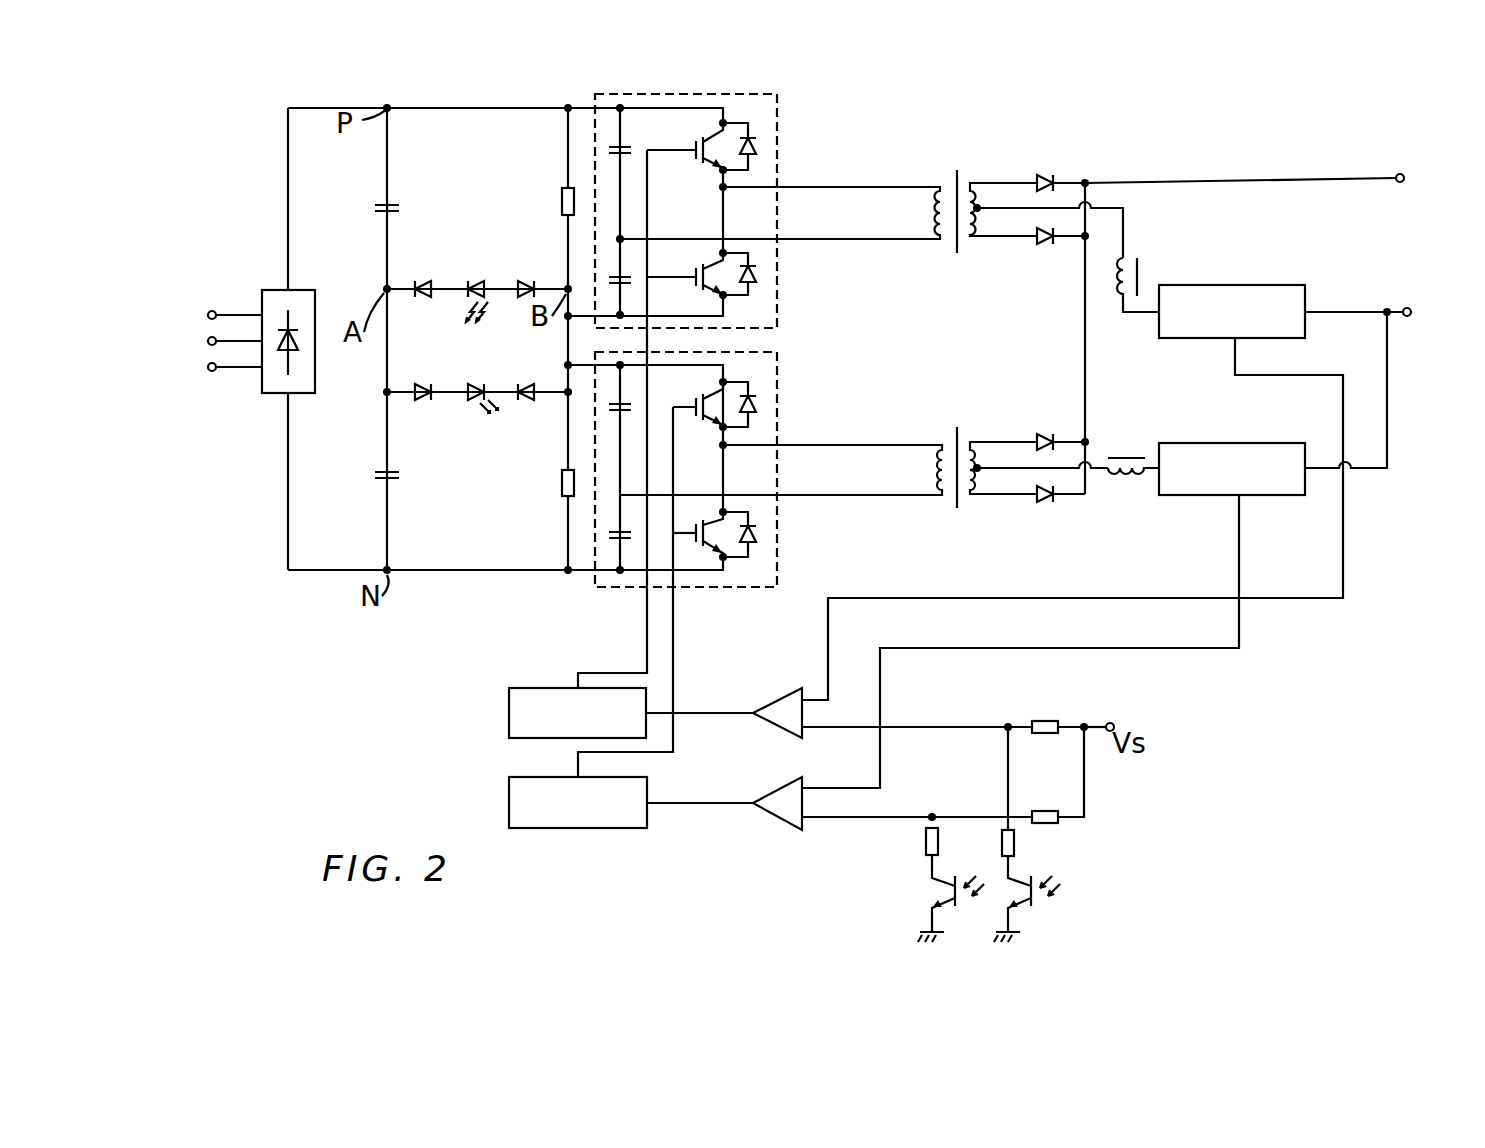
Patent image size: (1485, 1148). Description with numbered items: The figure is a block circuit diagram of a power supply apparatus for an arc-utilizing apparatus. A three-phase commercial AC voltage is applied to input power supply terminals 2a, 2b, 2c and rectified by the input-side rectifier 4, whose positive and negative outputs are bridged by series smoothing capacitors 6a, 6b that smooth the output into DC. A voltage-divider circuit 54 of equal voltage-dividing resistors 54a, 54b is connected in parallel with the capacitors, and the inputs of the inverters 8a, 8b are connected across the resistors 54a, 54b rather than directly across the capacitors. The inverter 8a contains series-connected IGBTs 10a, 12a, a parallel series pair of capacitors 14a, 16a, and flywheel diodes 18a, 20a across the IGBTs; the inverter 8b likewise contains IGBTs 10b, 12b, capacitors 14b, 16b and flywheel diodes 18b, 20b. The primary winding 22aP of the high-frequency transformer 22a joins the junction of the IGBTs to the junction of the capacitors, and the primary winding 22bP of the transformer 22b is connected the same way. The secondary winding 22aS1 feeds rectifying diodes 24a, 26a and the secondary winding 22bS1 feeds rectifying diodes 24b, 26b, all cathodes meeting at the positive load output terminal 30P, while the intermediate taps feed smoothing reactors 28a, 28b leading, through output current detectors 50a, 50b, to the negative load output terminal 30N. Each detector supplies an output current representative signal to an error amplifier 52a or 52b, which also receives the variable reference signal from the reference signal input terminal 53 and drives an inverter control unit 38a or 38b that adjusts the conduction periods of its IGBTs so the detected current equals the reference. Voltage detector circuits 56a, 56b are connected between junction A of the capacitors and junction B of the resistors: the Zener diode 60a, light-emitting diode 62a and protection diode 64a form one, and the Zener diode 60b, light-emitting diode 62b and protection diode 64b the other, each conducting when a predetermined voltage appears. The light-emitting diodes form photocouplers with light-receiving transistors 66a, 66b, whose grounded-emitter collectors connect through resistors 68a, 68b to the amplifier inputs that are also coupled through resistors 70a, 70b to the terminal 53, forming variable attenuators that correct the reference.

The input power supply terminal 2a is at (215, 311).
The input power supply terminal 2b is at (215, 346).
The input power supply terminal 2c is at (213, 372).
The input-side rectifier 4 is at (300, 302).
The smoothing capacitor 6a is at (378, 210).
The smoothing capacitor 6b is at (378, 480).
The inverter 8a is at (778, 268).
The inverter 8b is at (778, 360).
The IGBT 10a is at (716, 150).
The IGBT 10b is at (716, 407).
The IGBT 12a is at (722, 275).
The IGBT 12b is at (716, 530).
The capacitor 14a is at (632, 152).
The capacitor 14b is at (632, 408).
The capacitor 16a is at (632, 280).
The capacitor 16b is at (612, 540).
The flywheel diode 18a is at (758, 148).
The flywheel diode 18b is at (758, 406).
The flywheel diode 20a is at (758, 278).
The flywheel diode 20b is at (758, 536).
The high-frequency transformer 22a is at (974, 168).
The primary winding 22aP is at (943, 237).
The secondary winding 22aS1 is at (980, 205).
The high-frequency transformer 22b is at (972, 423).
The primary winding 22bP is at (928, 492).
The secondary winding 22bS1 is at (982, 482).
The rectifying diode 24a is at (1055, 176).
The rectifying diode 24b is at (1045, 433).
The rectifying diode 26a is at (1045, 246).
The rectifying diode 26b is at (1045, 504).
The smoothing reactor 28a is at (1140, 268).
The smoothing reactor 28b is at (1130, 478).
The positive load output terminal 30P is at (1397, 173).
The negative load output terminal 30N is at (1408, 308).
The inverter control unit 38a is at (509, 718).
The inverter control unit 38b is at (509, 802).
The output current detector 50a is at (1206, 286).
The output current detector 50b is at (1210, 443).
The error amplifier 52a is at (785, 712).
The error amplifier 52b is at (755, 820).
The reference signal input terminal 53 is at (1114, 726).
The voltage-divider circuit 54 is at (552, 180).
The voltage-dividing resistor 54a is at (562, 203).
The voltage-dividing resistor 54b is at (562, 489).
The voltage detector circuit 56a is at (493, 255).
The voltage detector circuit 56b is at (491, 373).
The Zener diode 60a is at (526, 297).
The Zener diode 60b is at (527, 398).
The light-emitting diode 62a is at (486, 286).
The light-emitting diode 62b is at (476, 400).
The protection diode 64a is at (423, 282).
The protection diode 64b is at (423, 398).
The light-receiving transistor 66a is at (1040, 896).
The light-receiving transistor 66b is at (942, 890).
The resistor 68a is at (1015, 845).
The resistor 68b is at (926, 845).
The resistor 70a is at (1046, 722).
The resistor 70b is at (1046, 812).